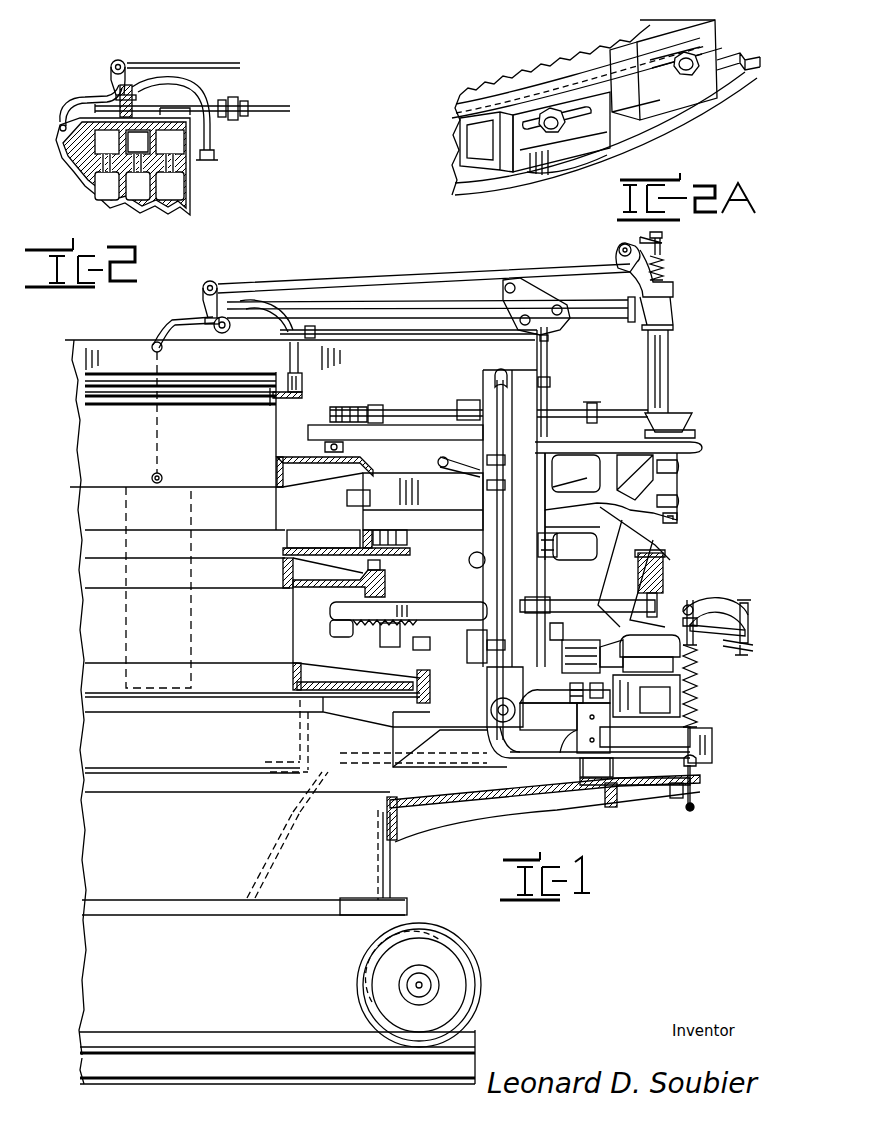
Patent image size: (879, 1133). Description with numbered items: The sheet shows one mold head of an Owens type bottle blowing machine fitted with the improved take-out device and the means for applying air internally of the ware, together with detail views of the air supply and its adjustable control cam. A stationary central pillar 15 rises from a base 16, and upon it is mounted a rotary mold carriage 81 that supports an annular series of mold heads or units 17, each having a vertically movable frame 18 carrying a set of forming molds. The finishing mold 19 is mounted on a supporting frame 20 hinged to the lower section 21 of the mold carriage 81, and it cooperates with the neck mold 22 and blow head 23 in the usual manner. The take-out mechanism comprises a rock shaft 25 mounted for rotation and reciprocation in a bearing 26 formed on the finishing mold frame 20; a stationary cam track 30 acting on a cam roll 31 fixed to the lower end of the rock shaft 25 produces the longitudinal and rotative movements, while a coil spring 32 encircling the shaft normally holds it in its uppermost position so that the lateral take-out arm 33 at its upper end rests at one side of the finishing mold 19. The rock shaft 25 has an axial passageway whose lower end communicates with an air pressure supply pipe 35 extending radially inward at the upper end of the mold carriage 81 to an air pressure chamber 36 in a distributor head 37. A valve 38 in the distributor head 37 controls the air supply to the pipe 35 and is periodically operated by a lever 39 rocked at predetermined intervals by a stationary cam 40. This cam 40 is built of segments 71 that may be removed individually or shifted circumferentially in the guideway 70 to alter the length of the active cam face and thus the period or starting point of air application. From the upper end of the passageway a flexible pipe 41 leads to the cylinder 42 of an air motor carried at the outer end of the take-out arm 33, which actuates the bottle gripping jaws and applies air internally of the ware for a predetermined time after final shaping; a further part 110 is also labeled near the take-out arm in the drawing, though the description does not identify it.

In FIG. 1, the stationary central pillar 15 is at (93, 620).
In FIG. 1, the base 16 is at (92, 832).
In FIG. 1, the mold heads or units 17 is at (687, 520).
In FIG. 1, the vertically movable frame 18 is at (660, 477).
In FIG. 1, the finishing mold 19 is at (660, 700).
In FIG. 1, the supporting frame 20 is at (568, 725).
In FIG. 1, the lower section of the mold carriage 21 is at (485, 748).
In FIG. 1, the neck mold 22 is at (648, 665).
In FIG. 1, the blow head 23 is at (650, 646).
In FIG. 1, the rock shaft 25 is at (694, 648).
In FIG. 1, the bearing 26 is at (700, 730).
In FIG. 1, the stationary cam track 30 is at (670, 790).
In FIG. 1, the cam roll 31 is at (680, 800).
In FIG. 1, the coil spring 32 is at (700, 668).
In FIG. 1, the lateral take-out arm 33 is at (717, 623).
In FIG. 2, the air pressure supply pipe 35 is at (270, 112).
In FIG. 1, the air pressure supply pipe 35 is at (390, 334).
In FIG. 2, the air pressure chamber 36 is at (136, 141).
In FIG. 2, the distributor head 37 is at (188, 192).
In FIG. 2, the valve 38 is at (110, 91).
In FIG. 1, the valve 38 is at (210, 311).
In FIG. 2, the lever 39 is at (202, 90).
In FIG. 1, the lever 39 is at (303, 386).
In FIG. 2, the stationary cam 40 is at (202, 163).
In FIG. 1, the stationary cam 40 is at (292, 405).
In FIG. 1, the flexible pipe 41 is at (712, 605).
In FIG. 1, the cylinder 42 is at (748, 620).
In FIG. 2A, the guideway 70 is at (487, 119).
In FIG. 2A, the segments 71 is at (605, 156).
In FIG. 1, the rotary mold carriage 81 is at (427, 819).
In FIG. 1, the bolt 110 is at (743, 652).